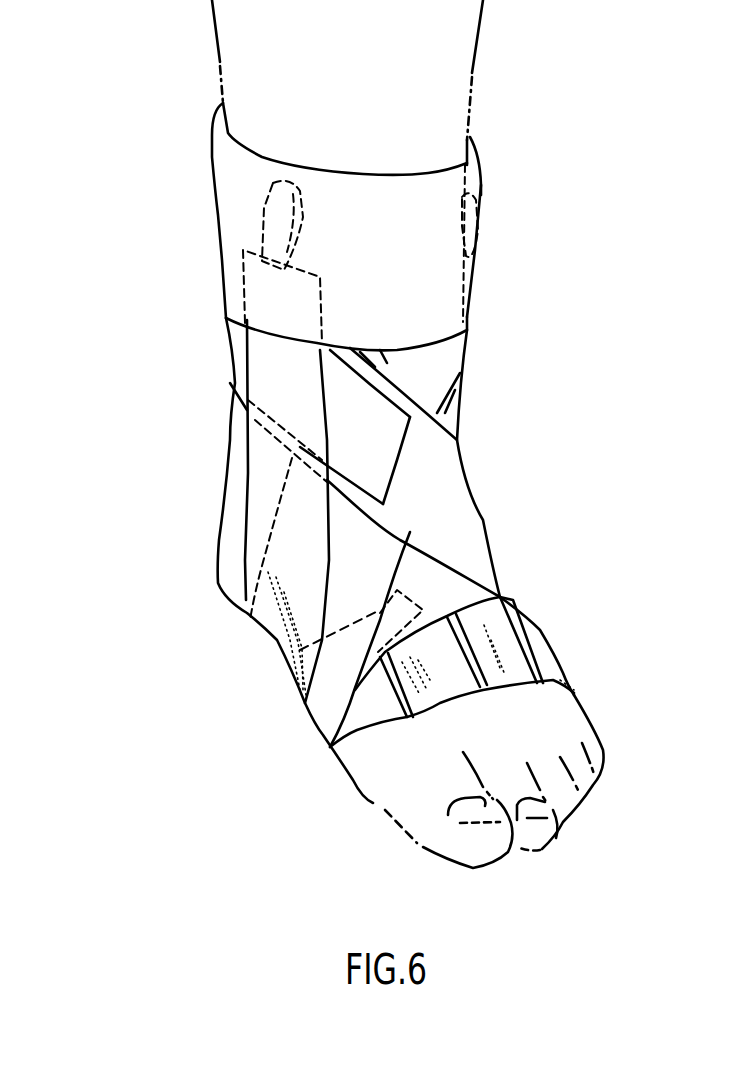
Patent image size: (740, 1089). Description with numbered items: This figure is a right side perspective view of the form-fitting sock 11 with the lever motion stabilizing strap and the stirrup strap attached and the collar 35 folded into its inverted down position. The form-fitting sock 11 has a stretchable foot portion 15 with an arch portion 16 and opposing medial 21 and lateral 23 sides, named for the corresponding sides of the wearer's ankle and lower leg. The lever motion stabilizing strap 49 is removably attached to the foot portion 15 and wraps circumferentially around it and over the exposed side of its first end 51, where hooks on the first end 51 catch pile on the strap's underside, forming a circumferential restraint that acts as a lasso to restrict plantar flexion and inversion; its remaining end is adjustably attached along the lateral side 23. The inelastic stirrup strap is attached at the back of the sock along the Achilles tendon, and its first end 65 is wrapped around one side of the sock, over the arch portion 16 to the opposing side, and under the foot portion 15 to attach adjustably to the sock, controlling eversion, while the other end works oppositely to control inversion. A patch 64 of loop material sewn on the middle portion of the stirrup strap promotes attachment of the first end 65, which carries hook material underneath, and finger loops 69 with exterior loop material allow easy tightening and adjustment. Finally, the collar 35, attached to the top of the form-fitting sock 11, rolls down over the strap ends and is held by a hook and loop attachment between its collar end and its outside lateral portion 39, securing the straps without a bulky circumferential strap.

The form-fitting sock 11 is at (173, 352).
The foot portion 15 is at (487, 647).
The arch portion 16 is at (423, 573).
The medial side 21 is at (490, 480).
The lateral side 23 is at (212, 420).
The collar 35 is at (392, 268).
The outside lateral portion 39 is at (484, 190).
The lever motion stabilizing strap 49 is at (443, 595).
The first end 51 is at (300, 652).
The patch 64 is at (437, 367).
The first end 65 is at (277, 300).
The finger loops 69 is at (278, 208).